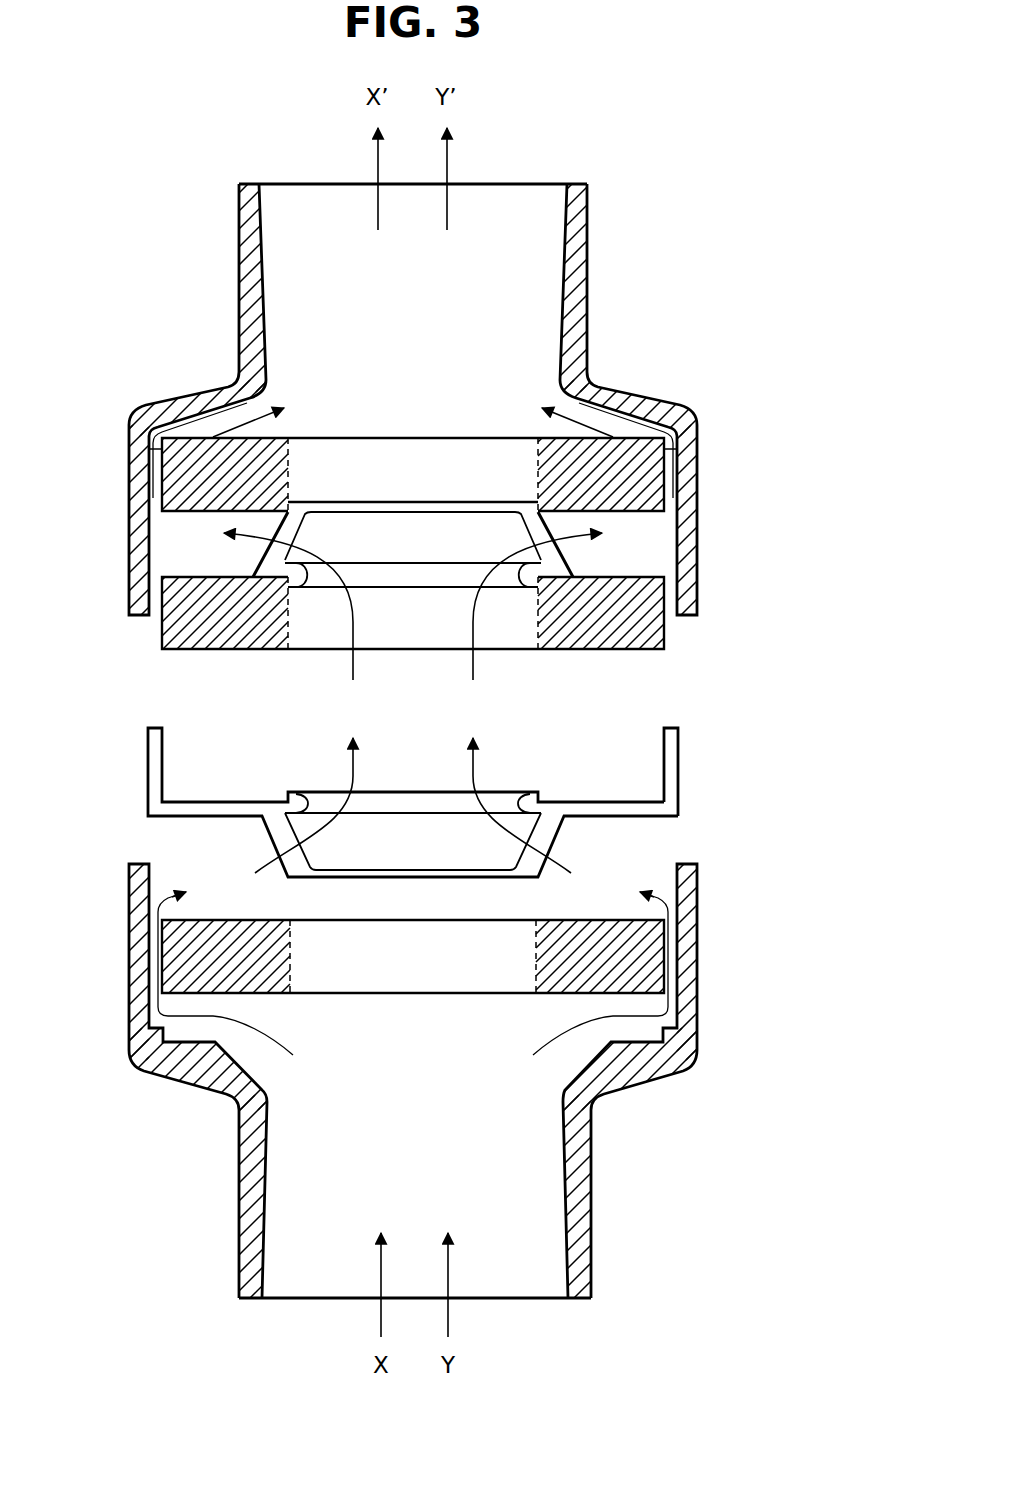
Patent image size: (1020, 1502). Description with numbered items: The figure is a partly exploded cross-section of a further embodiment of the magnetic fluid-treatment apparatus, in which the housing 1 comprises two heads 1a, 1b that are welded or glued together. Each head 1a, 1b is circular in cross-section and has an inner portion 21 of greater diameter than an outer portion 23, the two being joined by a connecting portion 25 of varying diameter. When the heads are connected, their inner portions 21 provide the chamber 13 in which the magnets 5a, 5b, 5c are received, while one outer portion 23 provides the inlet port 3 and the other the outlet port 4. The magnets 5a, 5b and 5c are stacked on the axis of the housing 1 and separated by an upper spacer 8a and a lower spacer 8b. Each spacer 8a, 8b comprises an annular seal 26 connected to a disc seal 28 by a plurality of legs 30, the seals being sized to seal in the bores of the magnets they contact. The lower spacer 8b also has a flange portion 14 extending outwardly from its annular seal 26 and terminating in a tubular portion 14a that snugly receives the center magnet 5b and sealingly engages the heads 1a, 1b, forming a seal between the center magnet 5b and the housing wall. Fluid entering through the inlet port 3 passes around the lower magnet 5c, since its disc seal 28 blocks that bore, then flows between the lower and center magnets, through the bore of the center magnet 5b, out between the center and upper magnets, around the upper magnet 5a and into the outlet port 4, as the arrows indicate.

The housing 1 is at (724, 515).
The head 1a is at (638, 382).
The head 1b is at (712, 1040).
The inlet port 3 is at (526, 1303).
The outlet port 4 is at (495, 181).
The upper magnet 5a is at (678, 465).
The center magnet 5b is at (680, 600).
The lower magnet 5c is at (677, 946).
The upper spacer 8a is at (570, 562).
The lower spacer 8b is at (545, 842).
The chamber 13 is at (394, 1099).
The flange portion 14 is at (631, 787).
The tubular portion 14a is at (682, 775).
The inner portion 21 is at (140, 567).
The outer portion 23 is at (580, 241).
The connecting portion 25 is at (206, 392).
The annular seal 26 is at (322, 589).
The disc seal 28 is at (345, 502).
The legs 30 is at (270, 560).